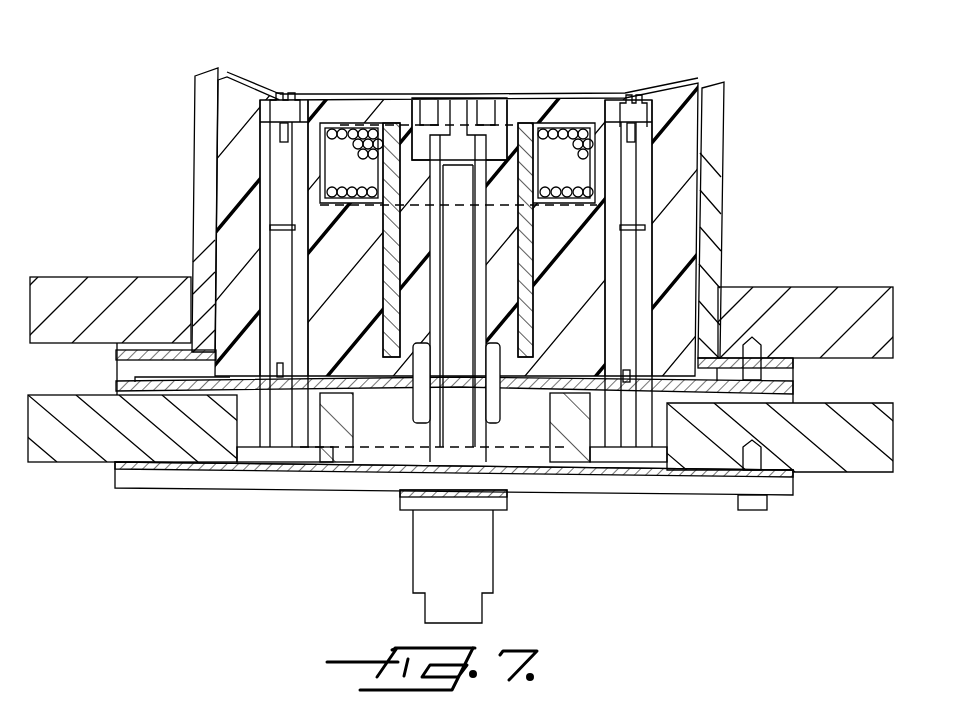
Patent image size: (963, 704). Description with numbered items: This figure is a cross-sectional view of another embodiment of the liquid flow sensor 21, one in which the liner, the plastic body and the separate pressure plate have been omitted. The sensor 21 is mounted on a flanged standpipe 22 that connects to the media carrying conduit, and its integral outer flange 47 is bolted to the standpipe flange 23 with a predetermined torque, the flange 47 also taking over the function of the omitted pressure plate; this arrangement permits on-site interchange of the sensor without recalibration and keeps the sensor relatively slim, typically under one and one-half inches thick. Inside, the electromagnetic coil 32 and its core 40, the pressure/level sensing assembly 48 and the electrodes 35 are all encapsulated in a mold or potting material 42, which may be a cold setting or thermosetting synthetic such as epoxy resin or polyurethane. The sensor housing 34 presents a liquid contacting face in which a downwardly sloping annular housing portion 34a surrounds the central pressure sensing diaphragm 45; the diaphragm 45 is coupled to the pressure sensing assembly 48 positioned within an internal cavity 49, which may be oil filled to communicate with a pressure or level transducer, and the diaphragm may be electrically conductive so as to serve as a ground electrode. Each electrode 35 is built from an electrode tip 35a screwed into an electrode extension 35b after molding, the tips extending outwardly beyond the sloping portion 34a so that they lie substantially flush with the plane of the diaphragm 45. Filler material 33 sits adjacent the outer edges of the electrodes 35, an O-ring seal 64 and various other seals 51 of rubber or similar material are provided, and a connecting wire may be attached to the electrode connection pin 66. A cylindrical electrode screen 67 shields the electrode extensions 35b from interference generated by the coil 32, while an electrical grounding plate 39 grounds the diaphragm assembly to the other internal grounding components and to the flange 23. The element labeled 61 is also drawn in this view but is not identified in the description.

The liquid flow sensor 21 is at (768, 93).
The flanged standpipe 22 is at (197, 92).
The standpipe flange 23 is at (807, 300).
The electromagnetic coil 32 is at (376, 98).
The filler material 33 is at (240, 98).
The sensor housing 34 is at (378, 92).
The downwardly sloping annular housing portion 34a is at (575, 97).
The electrode 35 is at (277, 90).
The electrode tip 35a is at (300, 96).
The electrode extension 35b is at (283, 155).
The electrical grounding plate 39 is at (688, 395).
The core 40 is at (522, 224).
The mold material 42 is at (576, 260).
The pressure sensing diaphragm 45 is at (517, 97).
The outer flange 47 is at (850, 465).
The pressure sensing assembly 48 is at (468, 300).
The internal cavity 49 is at (488, 110).
The seal 51 is at (205, 352).
The rod 61 is at (283, 216).
The O-ring seal 64 is at (362, 72).
The electrode connection pin 66 is at (282, 380).
The cylindrical electrode screen 67 is at (270, 227).